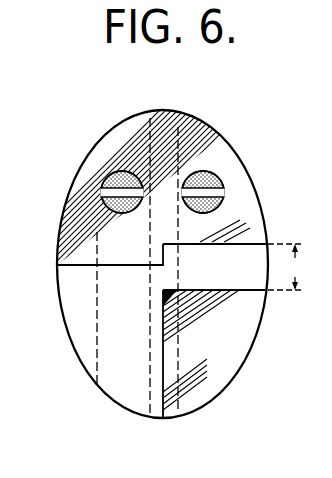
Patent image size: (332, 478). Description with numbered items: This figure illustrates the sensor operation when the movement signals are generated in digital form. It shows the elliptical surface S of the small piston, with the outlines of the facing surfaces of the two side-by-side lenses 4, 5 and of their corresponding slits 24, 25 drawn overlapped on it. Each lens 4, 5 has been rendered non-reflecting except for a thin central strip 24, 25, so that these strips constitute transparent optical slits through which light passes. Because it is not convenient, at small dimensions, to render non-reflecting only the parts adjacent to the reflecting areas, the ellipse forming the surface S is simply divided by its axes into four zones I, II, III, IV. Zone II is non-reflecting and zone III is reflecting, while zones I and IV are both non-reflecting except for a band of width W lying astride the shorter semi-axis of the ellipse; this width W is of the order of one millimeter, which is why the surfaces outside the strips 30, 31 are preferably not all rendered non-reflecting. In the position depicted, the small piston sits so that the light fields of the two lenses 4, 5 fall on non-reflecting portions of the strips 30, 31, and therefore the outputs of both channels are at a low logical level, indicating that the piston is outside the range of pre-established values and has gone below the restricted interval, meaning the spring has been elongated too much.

The lens 4 is at (108, 177).
The lens 5 is at (221, 178).
The thin central strip 24 is at (103, 195).
The thin central strip 25 is at (224, 194).
The strip 30 is at (123, 392).
The strip 31 is at (203, 395).
The elliptical surface S is at (123, 140).
The zone I is at (253, 219).
The zone II is at (64, 217).
The zone III is at (78, 340).
The zone IV is at (240, 350).
The band width W is at (287, 267).